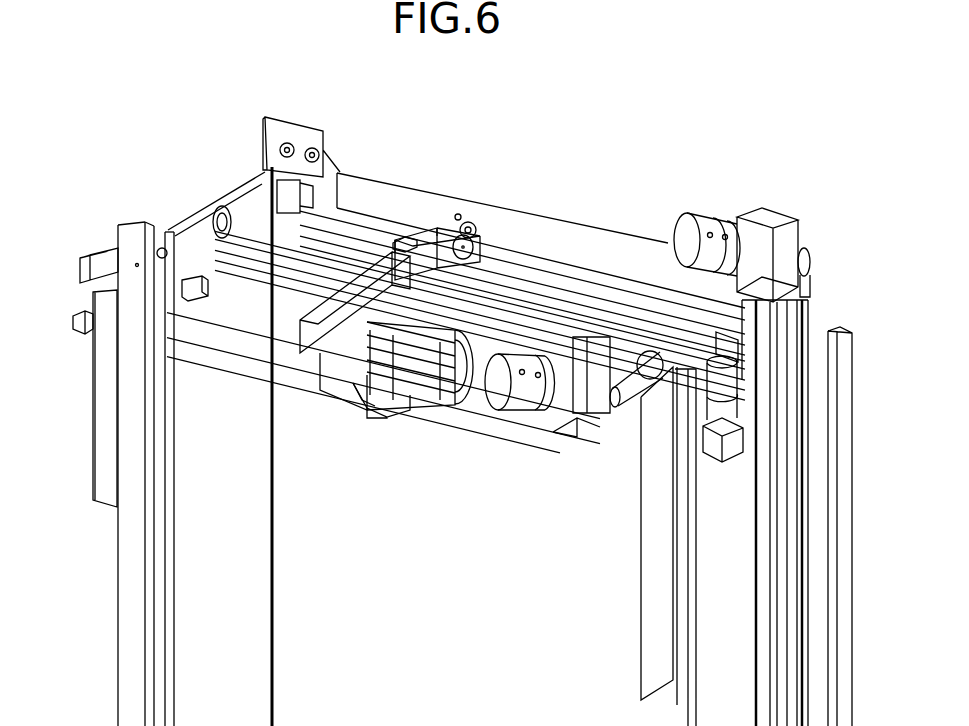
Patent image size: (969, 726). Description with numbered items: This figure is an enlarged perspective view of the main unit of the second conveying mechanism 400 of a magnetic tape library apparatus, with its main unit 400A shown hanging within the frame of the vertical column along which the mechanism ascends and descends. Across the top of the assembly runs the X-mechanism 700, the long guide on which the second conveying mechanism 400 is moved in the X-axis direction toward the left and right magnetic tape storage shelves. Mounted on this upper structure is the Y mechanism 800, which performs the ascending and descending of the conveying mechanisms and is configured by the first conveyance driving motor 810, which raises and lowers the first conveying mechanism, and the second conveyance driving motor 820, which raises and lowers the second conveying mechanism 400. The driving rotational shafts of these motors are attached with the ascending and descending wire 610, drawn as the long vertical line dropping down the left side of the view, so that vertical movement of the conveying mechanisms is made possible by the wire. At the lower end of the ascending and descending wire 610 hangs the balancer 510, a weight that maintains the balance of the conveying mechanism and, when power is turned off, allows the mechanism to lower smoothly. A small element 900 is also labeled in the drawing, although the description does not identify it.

The second conveying mechanism 400 is at (383, 423).
The main unit of the second conveying mechanism 400A is at (343, 390).
The balancer 510 is at (92, 437).
The ascending and descending wire 610 is at (273, 600).
The X-mechanism 700 is at (573, 240).
The Y mechanism 800 is at (802, 240).
The first conveyance driving motor 810 is at (707, 220).
The second conveyance driving motor 820 is at (517, 407).
The sensor 900 is at (407, 237).